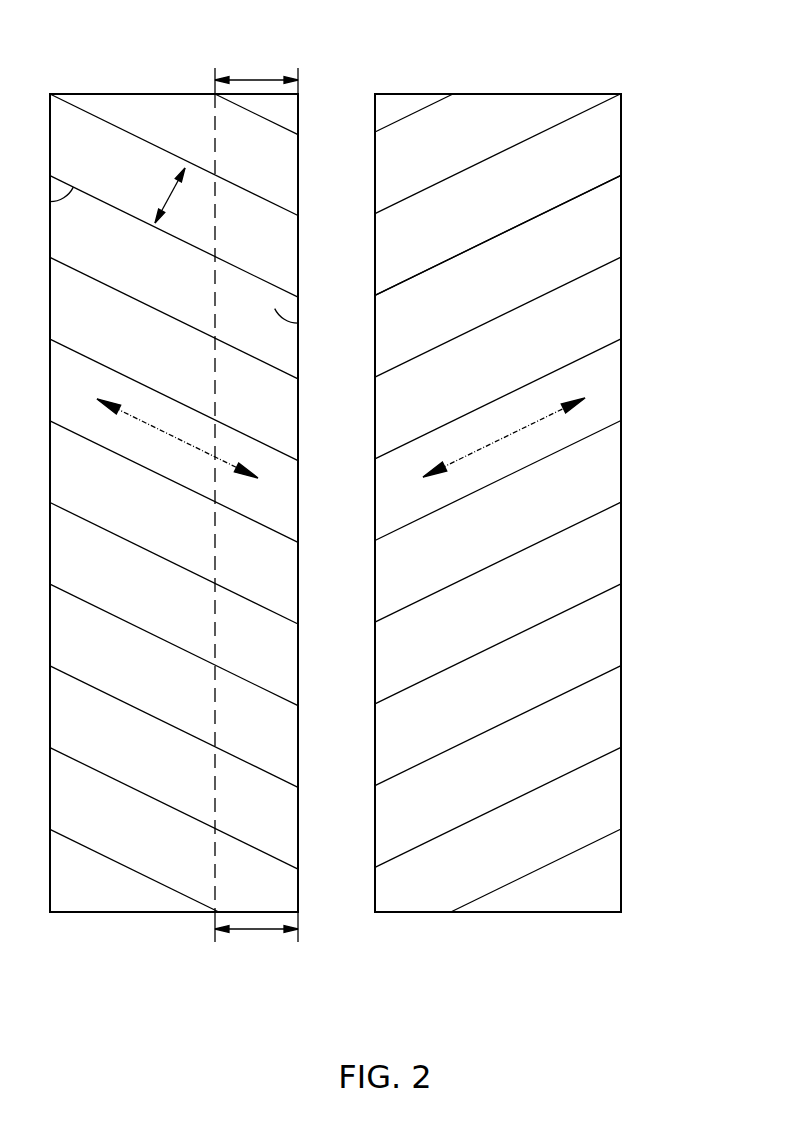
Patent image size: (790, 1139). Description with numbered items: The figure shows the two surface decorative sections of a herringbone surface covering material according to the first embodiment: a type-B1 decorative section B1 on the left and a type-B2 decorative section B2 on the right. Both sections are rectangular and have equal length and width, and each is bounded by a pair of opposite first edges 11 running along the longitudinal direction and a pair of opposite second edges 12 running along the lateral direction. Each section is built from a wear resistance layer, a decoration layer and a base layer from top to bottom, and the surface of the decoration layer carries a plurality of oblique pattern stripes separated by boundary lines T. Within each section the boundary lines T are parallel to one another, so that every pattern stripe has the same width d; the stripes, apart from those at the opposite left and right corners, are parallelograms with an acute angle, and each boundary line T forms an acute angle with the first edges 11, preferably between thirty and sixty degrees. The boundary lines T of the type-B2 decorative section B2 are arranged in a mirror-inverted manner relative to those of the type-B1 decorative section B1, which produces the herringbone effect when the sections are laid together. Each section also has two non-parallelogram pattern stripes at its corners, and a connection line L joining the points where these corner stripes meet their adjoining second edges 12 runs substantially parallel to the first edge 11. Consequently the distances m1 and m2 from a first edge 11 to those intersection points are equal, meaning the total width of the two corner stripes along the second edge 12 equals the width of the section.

The first edges 11 is at (621, 382).
The second edges 12 is at (565, 94).
The boundary lines T is at (588, 188).
The connection line L is at (213, 135).
The type-B1 decorative section B1 is at (191, 28).
The type-B2 decorative section B2 is at (509, 28).
The width of the pattern stripes d is at (162, 195).
The distance of the left corner intersection point from the first edge m1 is at (256, 71).
The distance of the right corner intersection point from the first edge m2 is at (256, 939).